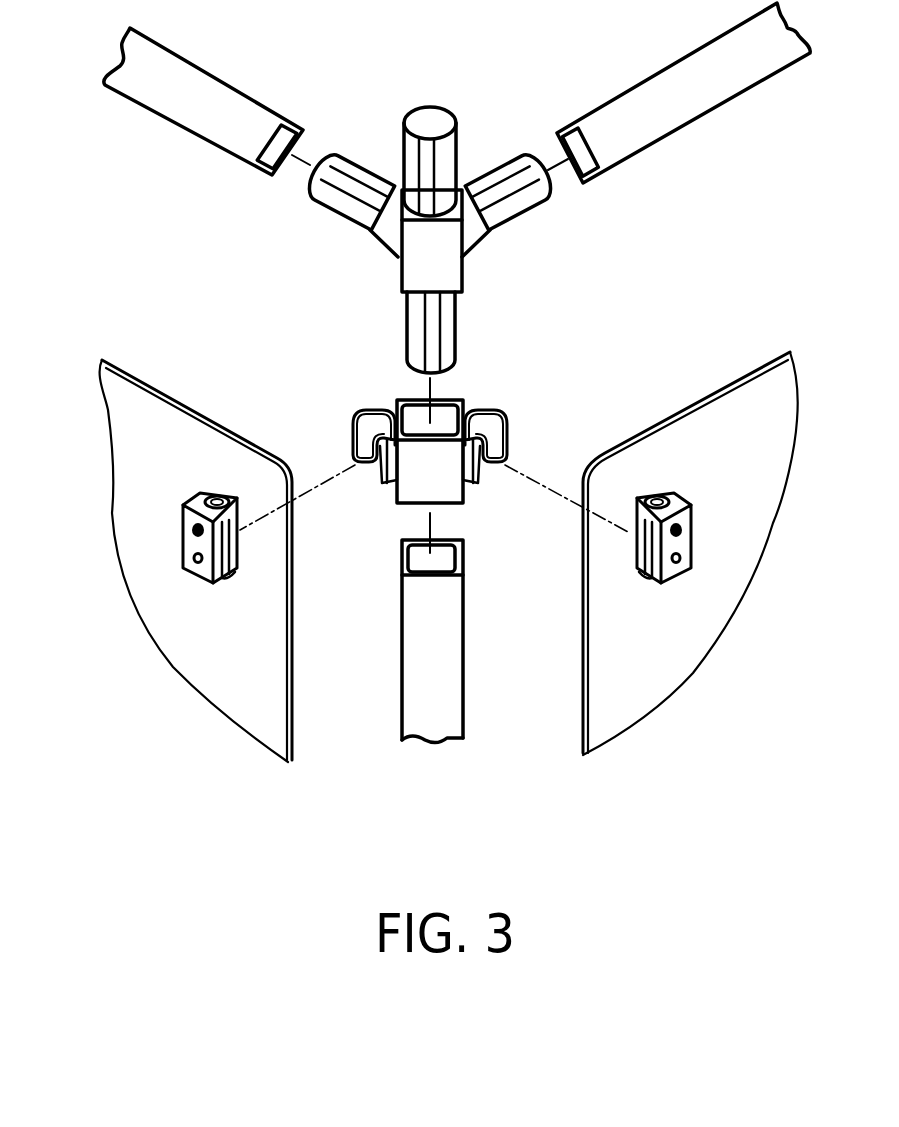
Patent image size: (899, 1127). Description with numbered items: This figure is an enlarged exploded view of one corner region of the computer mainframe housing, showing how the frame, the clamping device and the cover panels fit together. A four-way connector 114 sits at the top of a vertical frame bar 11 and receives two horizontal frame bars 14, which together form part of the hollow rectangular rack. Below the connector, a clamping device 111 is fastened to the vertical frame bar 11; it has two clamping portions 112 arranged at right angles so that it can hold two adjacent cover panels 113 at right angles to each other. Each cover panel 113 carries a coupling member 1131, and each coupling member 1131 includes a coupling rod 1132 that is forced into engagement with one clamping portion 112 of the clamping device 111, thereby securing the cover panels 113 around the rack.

The vertical frame bar 11 is at (423, 695).
The horizontal frame bar 14 is at (233, 105).
The clamping device 111 is at (427, 462).
The clamping portion 112 is at (352, 447).
The cover panel 113 is at (773, 443).
The four-way connector 114 is at (432, 258).
The coupling member 1131 is at (187, 548).
The coupling rod 1132 is at (223, 543).